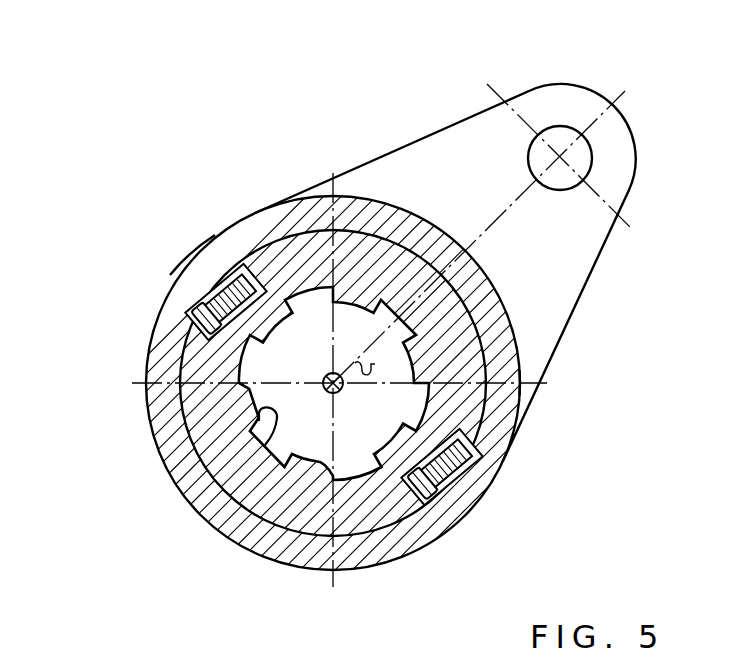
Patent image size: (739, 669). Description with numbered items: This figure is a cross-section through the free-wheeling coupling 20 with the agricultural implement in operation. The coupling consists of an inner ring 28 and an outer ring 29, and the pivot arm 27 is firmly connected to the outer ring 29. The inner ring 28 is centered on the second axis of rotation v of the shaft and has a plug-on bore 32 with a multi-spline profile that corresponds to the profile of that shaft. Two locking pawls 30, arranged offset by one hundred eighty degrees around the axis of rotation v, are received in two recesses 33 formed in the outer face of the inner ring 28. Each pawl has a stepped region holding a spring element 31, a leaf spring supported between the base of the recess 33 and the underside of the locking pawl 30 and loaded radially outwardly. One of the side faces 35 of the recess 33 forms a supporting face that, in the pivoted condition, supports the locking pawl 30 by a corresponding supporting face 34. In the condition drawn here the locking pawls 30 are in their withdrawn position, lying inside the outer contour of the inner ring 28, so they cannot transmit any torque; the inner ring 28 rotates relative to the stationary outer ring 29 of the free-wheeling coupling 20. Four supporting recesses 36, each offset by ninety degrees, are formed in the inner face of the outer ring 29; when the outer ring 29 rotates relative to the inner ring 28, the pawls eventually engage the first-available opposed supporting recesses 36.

The free-wheeling coupling 20 is at (333, 28).
The pivot arm 27 is at (378, 177).
The inner ring 28 is at (288, 252).
The outer ring 29 is at (235, 237).
The locking pawl 30 is at (200, 268).
The spring element 31 is at (207, 293).
The plug-on bore 32 is at (263, 443).
The recess 33 is at (240, 340).
The supporting face 34 is at (193, 328).
The side face 35 is at (465, 468).
The supporting recess 36 is at (500, 373).